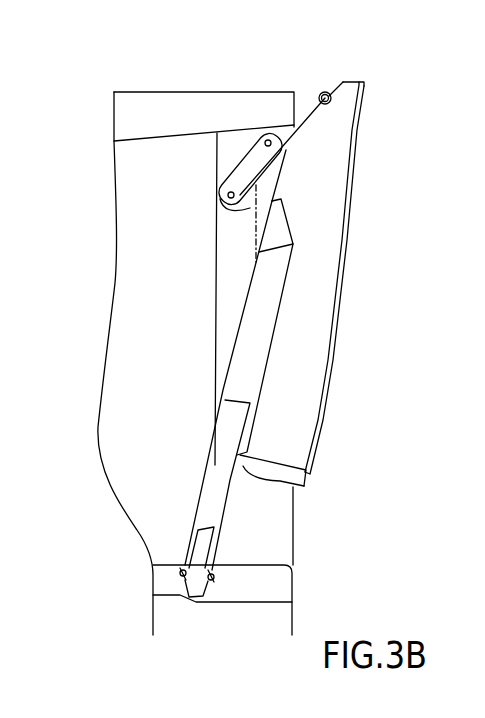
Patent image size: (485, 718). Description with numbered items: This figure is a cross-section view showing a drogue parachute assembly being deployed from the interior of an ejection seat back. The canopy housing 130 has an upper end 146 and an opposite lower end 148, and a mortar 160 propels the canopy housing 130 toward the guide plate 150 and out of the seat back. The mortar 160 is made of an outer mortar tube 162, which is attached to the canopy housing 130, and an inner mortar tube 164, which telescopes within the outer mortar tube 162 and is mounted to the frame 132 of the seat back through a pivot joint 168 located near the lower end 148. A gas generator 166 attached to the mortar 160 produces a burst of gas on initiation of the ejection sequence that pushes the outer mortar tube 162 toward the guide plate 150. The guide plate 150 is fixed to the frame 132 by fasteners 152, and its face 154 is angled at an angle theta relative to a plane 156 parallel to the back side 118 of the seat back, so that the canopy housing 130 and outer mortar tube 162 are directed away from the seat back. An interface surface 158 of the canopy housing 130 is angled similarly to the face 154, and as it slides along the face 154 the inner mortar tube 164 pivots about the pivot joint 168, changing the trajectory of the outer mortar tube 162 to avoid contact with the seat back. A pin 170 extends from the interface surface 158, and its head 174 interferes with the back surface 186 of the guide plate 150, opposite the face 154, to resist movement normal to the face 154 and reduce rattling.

The back side 118 is at (296, 106).
The canopy housing 130 is at (327, 216).
The frame 132 is at (137, 283).
The upper end 146 is at (363, 82).
The lower end 148 is at (303, 478).
The guide plate 150 is at (249, 166).
The fasteners 152 is at (228, 197).
The face 154 is at (288, 165).
The plane 156 is at (255, 232).
The interface surface 158 is at (327, 93).
The mortar 160 is at (266, 424).
The outer mortar tube 162 is at (242, 367).
The inner mortar tube 164 is at (228, 475).
The gas generator 166 is at (205, 552).
The pivot joint 168 is at (182, 573).
The pin 170 is at (343, 108).
The head 174 is at (322, 93).
The back surface 186 is at (249, 150).